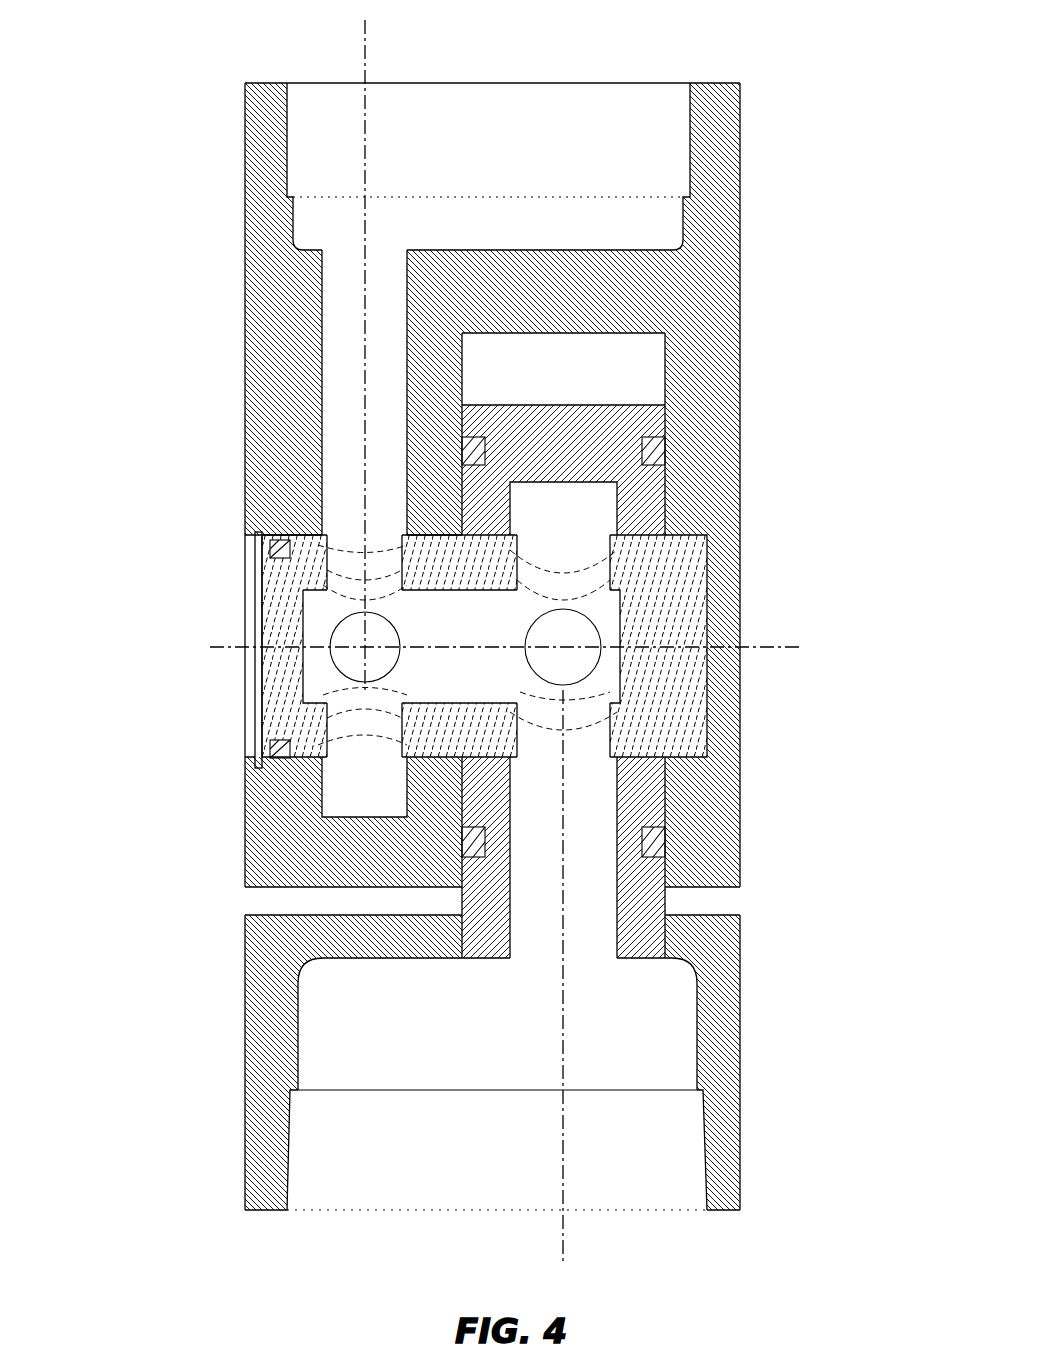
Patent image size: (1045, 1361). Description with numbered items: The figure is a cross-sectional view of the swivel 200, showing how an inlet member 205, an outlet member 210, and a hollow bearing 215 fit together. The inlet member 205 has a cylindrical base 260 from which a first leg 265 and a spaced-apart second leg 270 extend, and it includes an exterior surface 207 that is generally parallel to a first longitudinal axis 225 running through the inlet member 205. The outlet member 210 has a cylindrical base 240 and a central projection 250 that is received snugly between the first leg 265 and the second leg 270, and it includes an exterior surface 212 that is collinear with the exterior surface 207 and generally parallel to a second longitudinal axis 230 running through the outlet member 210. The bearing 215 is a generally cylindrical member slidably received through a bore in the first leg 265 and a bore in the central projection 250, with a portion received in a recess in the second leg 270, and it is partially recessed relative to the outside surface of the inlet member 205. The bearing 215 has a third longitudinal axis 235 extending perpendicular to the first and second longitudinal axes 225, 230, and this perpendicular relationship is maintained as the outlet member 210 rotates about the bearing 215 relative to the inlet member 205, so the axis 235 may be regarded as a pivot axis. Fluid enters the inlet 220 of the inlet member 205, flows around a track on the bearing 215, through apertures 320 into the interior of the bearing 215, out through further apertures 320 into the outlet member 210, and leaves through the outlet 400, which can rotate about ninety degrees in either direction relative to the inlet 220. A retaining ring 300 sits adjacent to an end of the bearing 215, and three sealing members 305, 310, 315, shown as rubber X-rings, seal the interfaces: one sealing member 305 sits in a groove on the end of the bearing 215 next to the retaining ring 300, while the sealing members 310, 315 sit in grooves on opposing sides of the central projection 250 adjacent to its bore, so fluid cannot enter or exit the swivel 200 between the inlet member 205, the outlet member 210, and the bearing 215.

The swivel 200 is at (198, 269).
The inlet member 205 is at (772, 44).
The exterior surface 207 is at (246, 504).
The outlet member 210 is at (773, 1140).
The exterior surface 212 is at (247, 934).
The hollow bearing 215 is at (300, 756).
The inlet 220 is at (476, 121).
The first longitudinal axis 225 is at (362, 112).
The second longitudinal axis 230 is at (563, 1160).
The third longitudinal axis 235 is at (770, 668).
The cylindrical base 240 is at (723, 1053).
The central projection 250 is at (593, 425).
The cylindrical base 260 is at (722, 157).
The first leg 265 is at (262, 435).
The second leg 270 is at (725, 848).
The retaining ring 300 is at (244, 676).
The sealing member 305 is at (280, 550).
The sealing member 310 is at (488, 403).
The sealing member 315 is at (666, 448).
The apertures 320 is at (372, 665).
The outlet 400 is at (475, 1172).